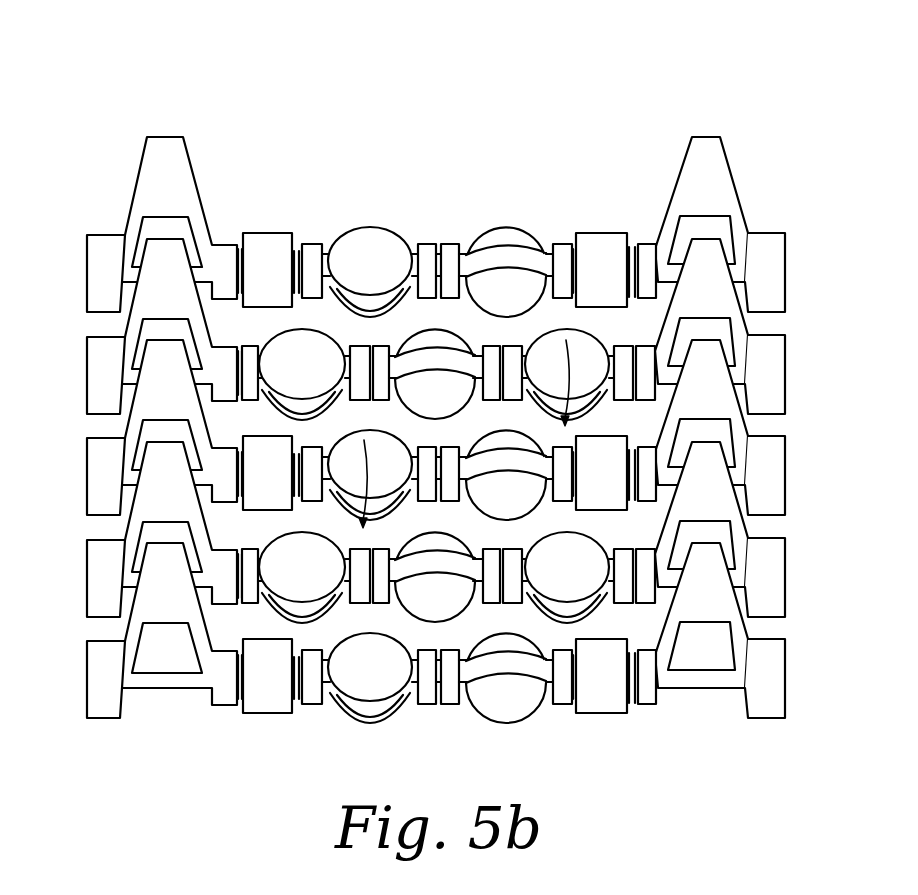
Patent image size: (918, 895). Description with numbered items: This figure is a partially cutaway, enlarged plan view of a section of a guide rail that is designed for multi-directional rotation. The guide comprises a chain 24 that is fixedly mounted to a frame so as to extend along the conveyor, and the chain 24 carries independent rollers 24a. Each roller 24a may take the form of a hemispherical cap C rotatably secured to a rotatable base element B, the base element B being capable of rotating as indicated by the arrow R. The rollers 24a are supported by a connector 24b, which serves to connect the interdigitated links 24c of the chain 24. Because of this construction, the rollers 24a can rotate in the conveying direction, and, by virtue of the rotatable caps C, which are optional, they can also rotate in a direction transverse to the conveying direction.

The chain 24 is at (562, 112).
The rollers 24a is at (447, 220).
The connector 24b is at (791, 238).
The interdigitated links 24c is at (731, 170).
The rotatable base element B is at (468, 232).
The hemispherical caps C is at (387, 232).
The arrow R is at (365, 474).